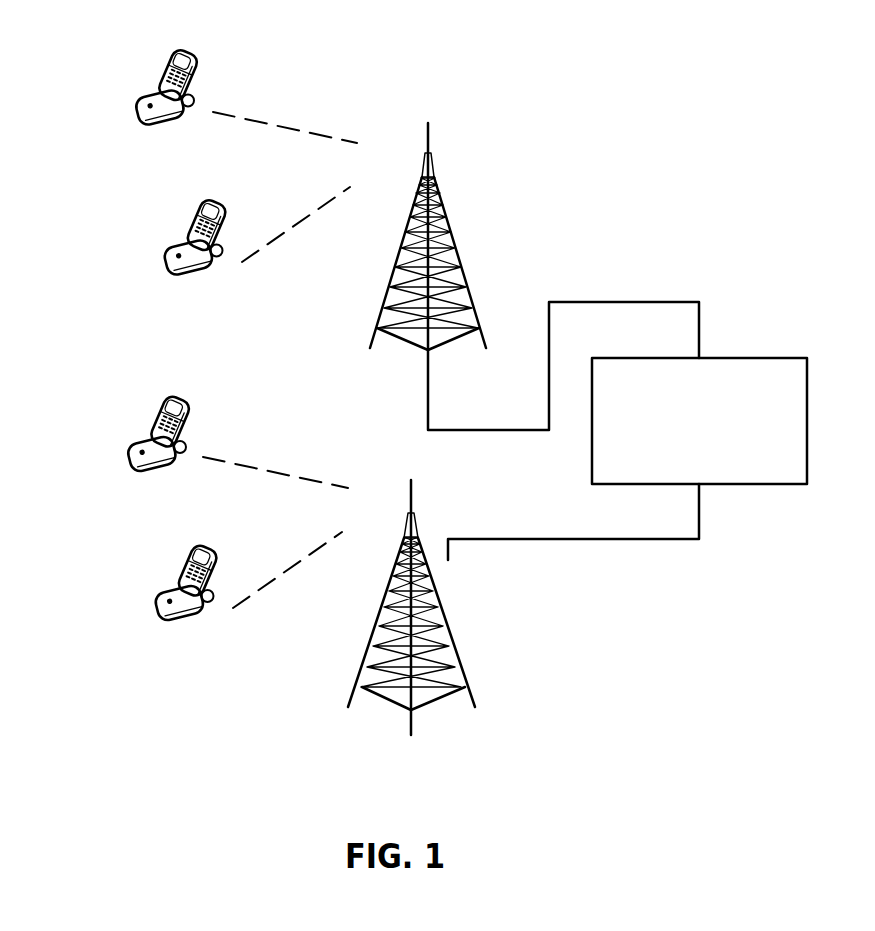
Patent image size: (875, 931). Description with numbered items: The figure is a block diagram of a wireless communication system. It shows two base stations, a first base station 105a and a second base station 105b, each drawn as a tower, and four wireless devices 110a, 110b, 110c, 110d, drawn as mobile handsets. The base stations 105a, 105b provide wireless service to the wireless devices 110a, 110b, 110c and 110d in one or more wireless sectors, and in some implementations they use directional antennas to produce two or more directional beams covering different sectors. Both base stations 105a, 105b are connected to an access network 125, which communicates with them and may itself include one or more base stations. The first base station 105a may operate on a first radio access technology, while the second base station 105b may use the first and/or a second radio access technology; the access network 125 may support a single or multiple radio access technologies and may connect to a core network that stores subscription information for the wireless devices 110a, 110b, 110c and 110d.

The wireless device 110a is at (155, 61).
The wireless device 110b is at (183, 212).
The wireless device 110c is at (145, 408).
The wireless device 110d is at (173, 558).
The first base station 105a is at (443, 207).
The second base station 105b is at (418, 520).
The access network 125 is at (607, 358).